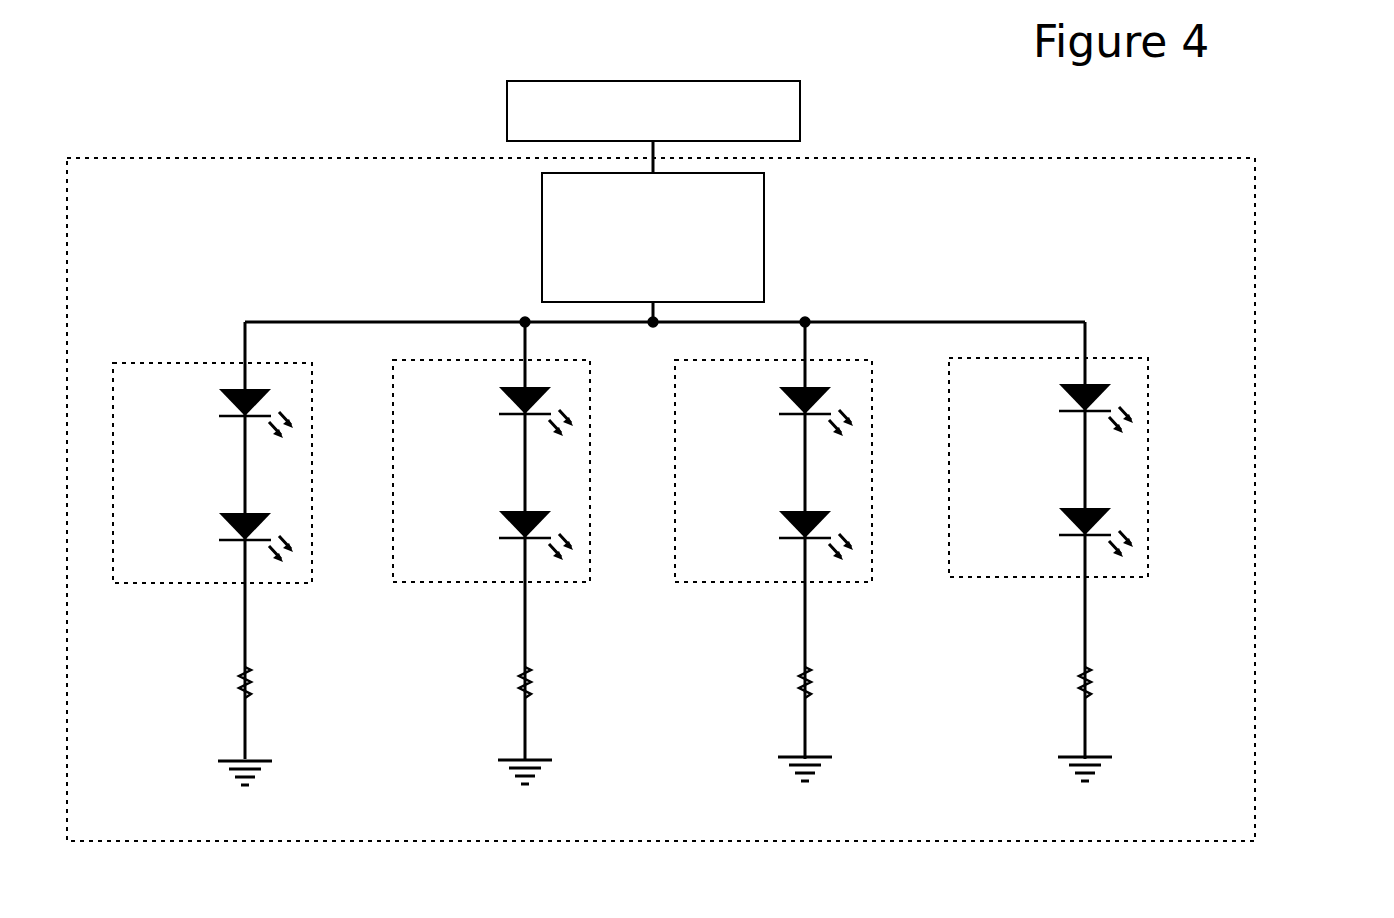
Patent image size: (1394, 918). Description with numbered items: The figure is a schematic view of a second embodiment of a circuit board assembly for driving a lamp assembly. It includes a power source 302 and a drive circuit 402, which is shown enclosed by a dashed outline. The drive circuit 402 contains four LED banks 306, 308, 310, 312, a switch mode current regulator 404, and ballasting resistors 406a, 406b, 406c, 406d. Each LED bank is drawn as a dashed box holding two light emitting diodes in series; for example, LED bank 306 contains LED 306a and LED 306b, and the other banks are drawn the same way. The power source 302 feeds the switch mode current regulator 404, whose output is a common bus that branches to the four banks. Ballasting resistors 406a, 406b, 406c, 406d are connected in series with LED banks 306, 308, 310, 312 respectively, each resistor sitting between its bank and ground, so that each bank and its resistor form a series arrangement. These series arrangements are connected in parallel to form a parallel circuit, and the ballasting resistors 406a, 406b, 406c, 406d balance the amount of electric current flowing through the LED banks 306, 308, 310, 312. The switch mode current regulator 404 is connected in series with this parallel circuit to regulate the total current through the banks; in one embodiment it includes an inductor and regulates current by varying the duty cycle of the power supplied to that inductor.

The power source 302 is at (800, 111).
The switch mode current regulator 404 is at (764, 198).
The drive circuit 402 is at (1256, 545).
The LED bank 306 is at (265, 363).
The LED bank 308 is at (427, 360).
The LED bank 310 is at (708, 360).
The LED bank 312 is at (1103, 357).
The LED 306a is at (227, 514).
The LED 306b is at (227, 390).
The ballasting resistor 406a is at (293, 680).
The ballasting resistor 406b is at (573, 680).
The ballasting resistor 406c is at (848, 679).
The ballasting resistor 406d is at (1129, 679).